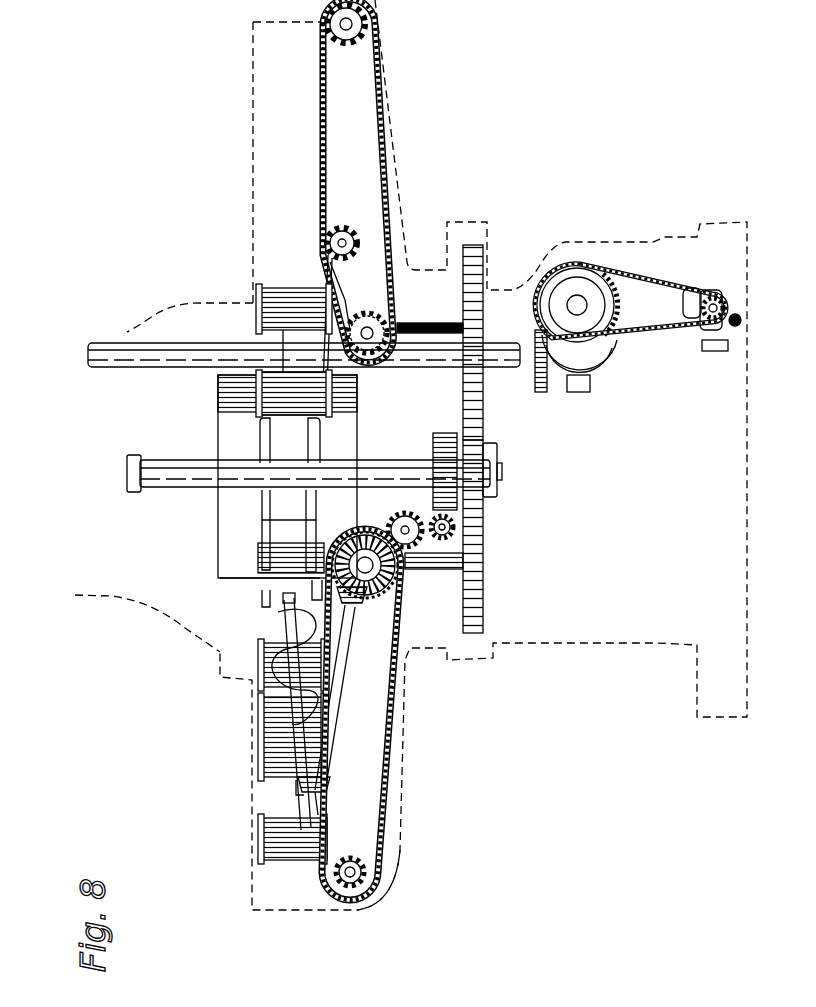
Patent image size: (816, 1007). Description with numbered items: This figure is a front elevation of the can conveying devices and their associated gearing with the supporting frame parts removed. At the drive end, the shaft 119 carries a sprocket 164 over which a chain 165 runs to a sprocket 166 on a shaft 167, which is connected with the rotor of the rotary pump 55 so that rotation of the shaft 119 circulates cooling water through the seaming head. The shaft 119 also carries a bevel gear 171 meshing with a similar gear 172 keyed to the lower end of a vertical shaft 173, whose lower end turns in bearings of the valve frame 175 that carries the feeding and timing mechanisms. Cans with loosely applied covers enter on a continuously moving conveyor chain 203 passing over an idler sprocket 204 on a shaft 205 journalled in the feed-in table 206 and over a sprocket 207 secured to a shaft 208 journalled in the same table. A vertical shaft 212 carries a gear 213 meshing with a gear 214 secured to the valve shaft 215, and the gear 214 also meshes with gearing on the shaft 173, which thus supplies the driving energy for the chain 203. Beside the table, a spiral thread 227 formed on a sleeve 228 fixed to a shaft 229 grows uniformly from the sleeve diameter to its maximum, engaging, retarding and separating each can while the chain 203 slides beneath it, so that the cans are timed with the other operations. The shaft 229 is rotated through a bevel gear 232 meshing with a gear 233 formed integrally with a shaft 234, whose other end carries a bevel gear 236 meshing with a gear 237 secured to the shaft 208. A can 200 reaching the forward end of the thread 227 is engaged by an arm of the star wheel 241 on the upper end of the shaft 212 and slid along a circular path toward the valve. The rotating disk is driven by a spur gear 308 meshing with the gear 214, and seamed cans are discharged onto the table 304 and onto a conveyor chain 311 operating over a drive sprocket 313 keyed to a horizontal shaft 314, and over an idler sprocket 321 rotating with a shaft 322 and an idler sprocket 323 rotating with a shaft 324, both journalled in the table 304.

The rotary pump 55 is at (721, 296).
The shaft 119 is at (570, 300).
The sprocket 164 is at (583, 280).
The chain 165 is at (617, 275).
The sprocket 166 is at (703, 294).
The shaft 167 is at (738, 325).
The bevel gear 171 is at (598, 362).
The bevel gear 172 is at (546, 393).
The vertical shaft 173 is at (112, 340).
The valve frame 175 is at (200, 303).
The can 200 is at (285, 870).
The conveyor chain 203 is at (392, 797).
The idler sprocket 204 is at (358, 882).
The shaft 205 is at (347, 882).
The feed-in table 206 is at (402, 846).
The sprocket 207 is at (413, 560).
The shaft 208 is at (388, 574).
The vertical shaft 212 is at (253, 563).
The gear 213 is at (485, 575).
The gear 214 is at (500, 460).
The valve shaft 215 is at (399, 470).
The spiral thread 227 is at (284, 636).
The sleeve 228 is at (300, 730).
The shaft 229 is at (305, 767).
The bevel gear 232 is at (298, 788).
The bevel gear 233 is at (330, 790).
The shaft 234 is at (336, 702).
The bevel gear 236 is at (363, 608).
The gear 237 is at (350, 535).
The star wheel 241 is at (262, 527).
The table 304 is at (403, 165).
The spur gear 308 is at (472, 244).
The conveyor chain 311 is at (322, 165).
The drive sprocket 313 is at (372, 352).
The horizontal shaft 314 is at (368, 320).
The idler sprocket 321 is at (331, 240).
The shaft 322 is at (345, 228).
The idler sprocket 323 is at (318, 46).
The shaft 324 is at (352, 27).